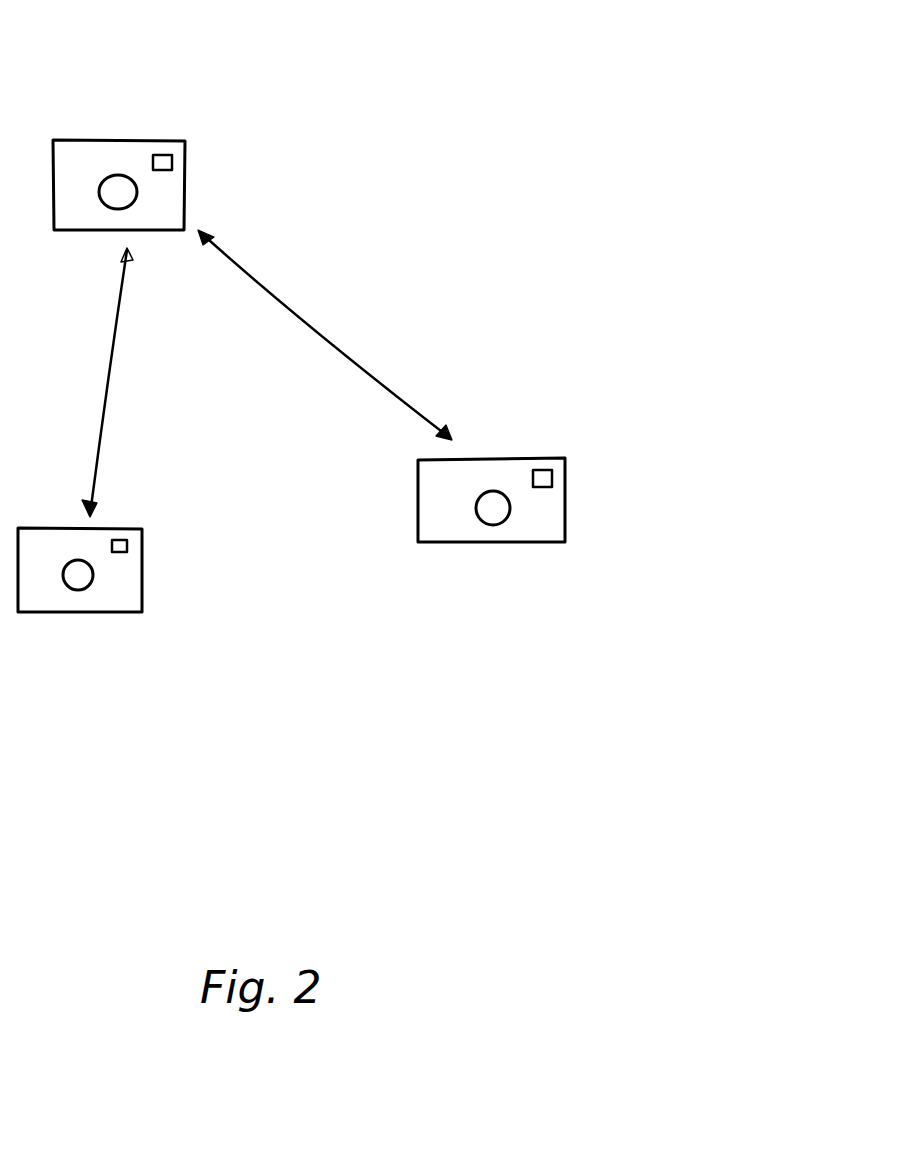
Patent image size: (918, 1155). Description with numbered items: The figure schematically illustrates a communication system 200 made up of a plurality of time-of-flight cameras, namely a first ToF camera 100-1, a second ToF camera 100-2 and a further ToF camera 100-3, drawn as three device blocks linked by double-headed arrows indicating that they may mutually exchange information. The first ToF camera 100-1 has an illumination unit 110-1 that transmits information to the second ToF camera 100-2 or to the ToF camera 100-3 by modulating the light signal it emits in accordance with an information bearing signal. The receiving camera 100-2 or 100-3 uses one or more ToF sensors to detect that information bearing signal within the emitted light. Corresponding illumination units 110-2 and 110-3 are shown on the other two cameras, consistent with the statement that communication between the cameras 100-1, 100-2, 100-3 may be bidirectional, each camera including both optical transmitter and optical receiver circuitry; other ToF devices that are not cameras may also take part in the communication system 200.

The communication system 200 is at (470, 122).
The first ToF camera 100-1 is at (165, 139).
The second ToF camera 100-2 is at (114, 594).
The ToF camera 100-3 is at (529, 522).
The illumination unit 110-1 is at (165, 155).
The sensor / camera module 110-2 is at (122, 540).
The sensor / camera module 110-3 is at (543, 470).